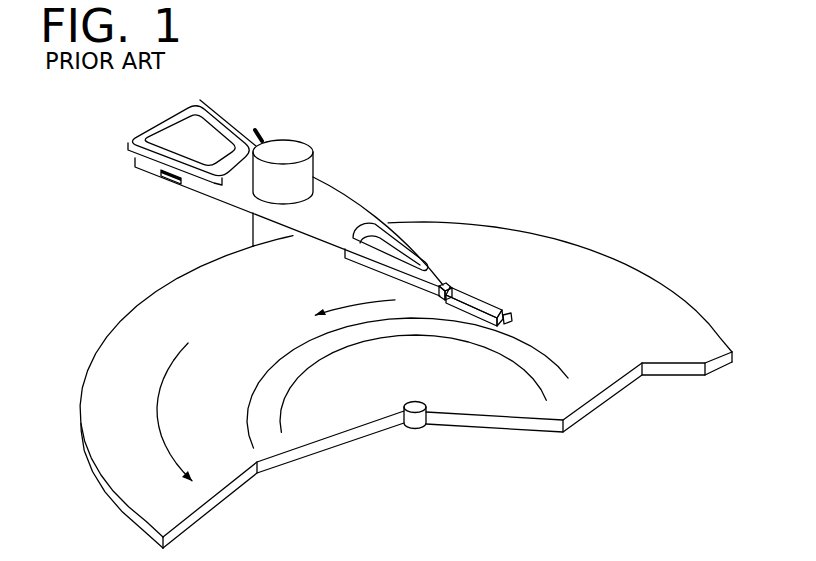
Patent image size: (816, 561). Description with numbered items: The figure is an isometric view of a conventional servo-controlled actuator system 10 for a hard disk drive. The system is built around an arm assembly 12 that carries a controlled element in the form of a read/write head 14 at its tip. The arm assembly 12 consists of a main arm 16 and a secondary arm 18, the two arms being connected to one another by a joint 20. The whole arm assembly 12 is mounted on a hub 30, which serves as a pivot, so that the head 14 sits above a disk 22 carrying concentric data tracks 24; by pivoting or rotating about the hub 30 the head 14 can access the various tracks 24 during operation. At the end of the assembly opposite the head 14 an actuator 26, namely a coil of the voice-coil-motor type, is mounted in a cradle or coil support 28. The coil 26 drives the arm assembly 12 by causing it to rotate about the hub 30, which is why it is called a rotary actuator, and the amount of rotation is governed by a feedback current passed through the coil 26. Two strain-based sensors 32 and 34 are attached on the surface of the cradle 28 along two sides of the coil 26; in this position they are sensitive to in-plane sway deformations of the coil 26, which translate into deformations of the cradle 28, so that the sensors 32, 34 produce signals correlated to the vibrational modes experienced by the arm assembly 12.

The servo-controlled actuator system 10 is at (402, 135).
The arm assembly 12 is at (167, 252).
The read/write head 14 is at (510, 325).
The main arm 16 is at (348, 210).
The secondary arm 18 is at (487, 302).
The joint 20 is at (457, 282).
The disk 22 is at (632, 285).
The data tracks 24 is at (270, 365).
The actuator coil 26 is at (157, 133).
The coil support 28 is at (227, 113).
The hub 30 is at (298, 148).
The sensor 32 is at (164, 178).
The sensor 34 is at (258, 135).